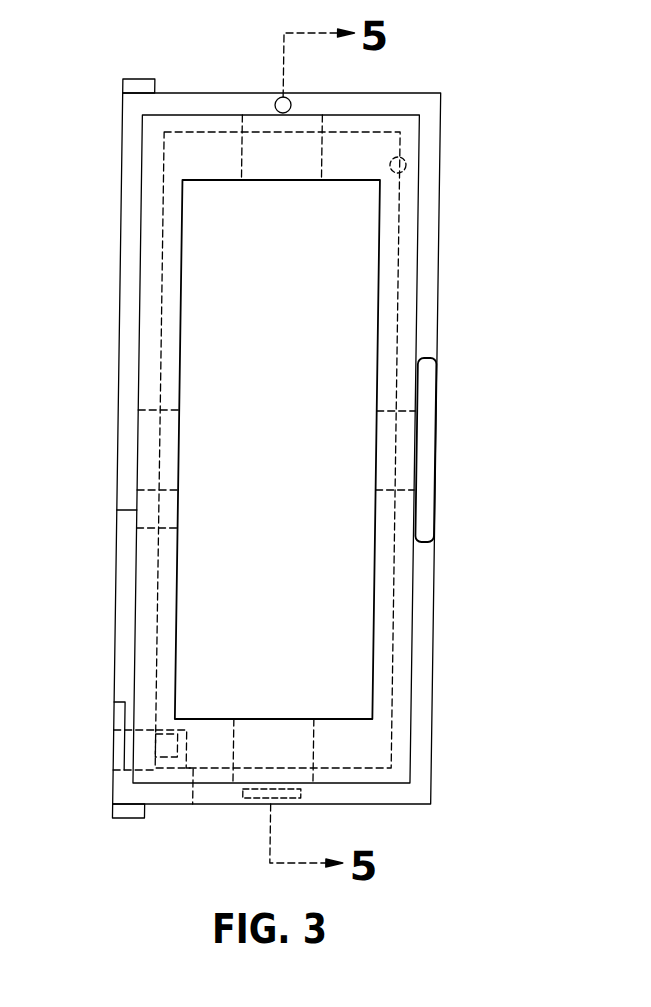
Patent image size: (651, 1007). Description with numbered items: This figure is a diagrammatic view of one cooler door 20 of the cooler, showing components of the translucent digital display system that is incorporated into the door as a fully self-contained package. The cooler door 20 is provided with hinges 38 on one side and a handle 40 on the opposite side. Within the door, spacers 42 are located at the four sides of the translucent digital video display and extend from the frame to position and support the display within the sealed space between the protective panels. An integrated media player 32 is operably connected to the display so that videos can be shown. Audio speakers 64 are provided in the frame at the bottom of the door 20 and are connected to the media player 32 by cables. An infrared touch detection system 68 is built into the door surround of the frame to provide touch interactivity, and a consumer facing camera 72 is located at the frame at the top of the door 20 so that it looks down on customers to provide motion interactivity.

The cooler door 20 is at (452, 275).
The media player 32 is at (129, 758).
The hinges 38 is at (139, 79).
The handle 40 is at (431, 447).
The spacers 42 is at (242, 162).
The audio speakers 64 is at (261, 797).
The infrared touch detection system 68 is at (407, 160).
The consumer facing camera 72 is at (290, 97).